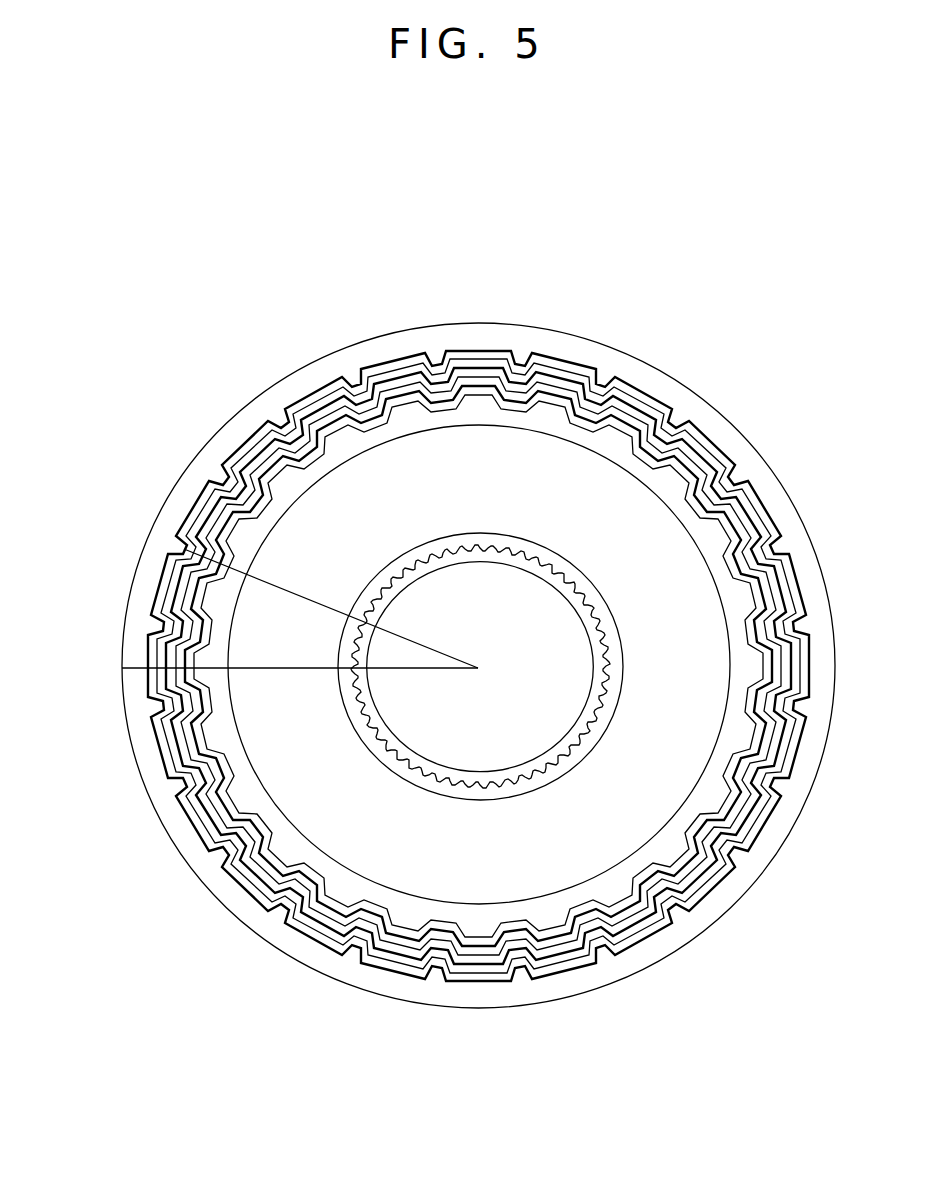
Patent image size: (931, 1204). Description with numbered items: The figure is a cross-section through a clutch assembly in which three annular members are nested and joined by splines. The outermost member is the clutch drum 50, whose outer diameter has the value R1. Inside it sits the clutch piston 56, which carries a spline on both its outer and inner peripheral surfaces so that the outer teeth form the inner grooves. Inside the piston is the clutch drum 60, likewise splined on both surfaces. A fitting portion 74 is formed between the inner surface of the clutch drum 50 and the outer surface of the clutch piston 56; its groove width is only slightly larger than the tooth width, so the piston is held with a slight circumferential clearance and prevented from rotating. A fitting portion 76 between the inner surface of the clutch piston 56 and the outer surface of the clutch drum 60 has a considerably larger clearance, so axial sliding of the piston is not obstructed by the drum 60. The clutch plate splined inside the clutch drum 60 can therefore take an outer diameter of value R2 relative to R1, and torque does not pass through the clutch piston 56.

The clutch drum 50 is at (253, 435).
The clutch piston 56 is at (208, 513).
The clutch drum 60 is at (185, 550).
The fitting portion 74 is at (285, 425).
The fitting portion 76 is at (315, 425).
The outer diameter of the clutch drum R1 is at (300, 689).
The outer diameter of the clutch plate R2 is at (331, 608).